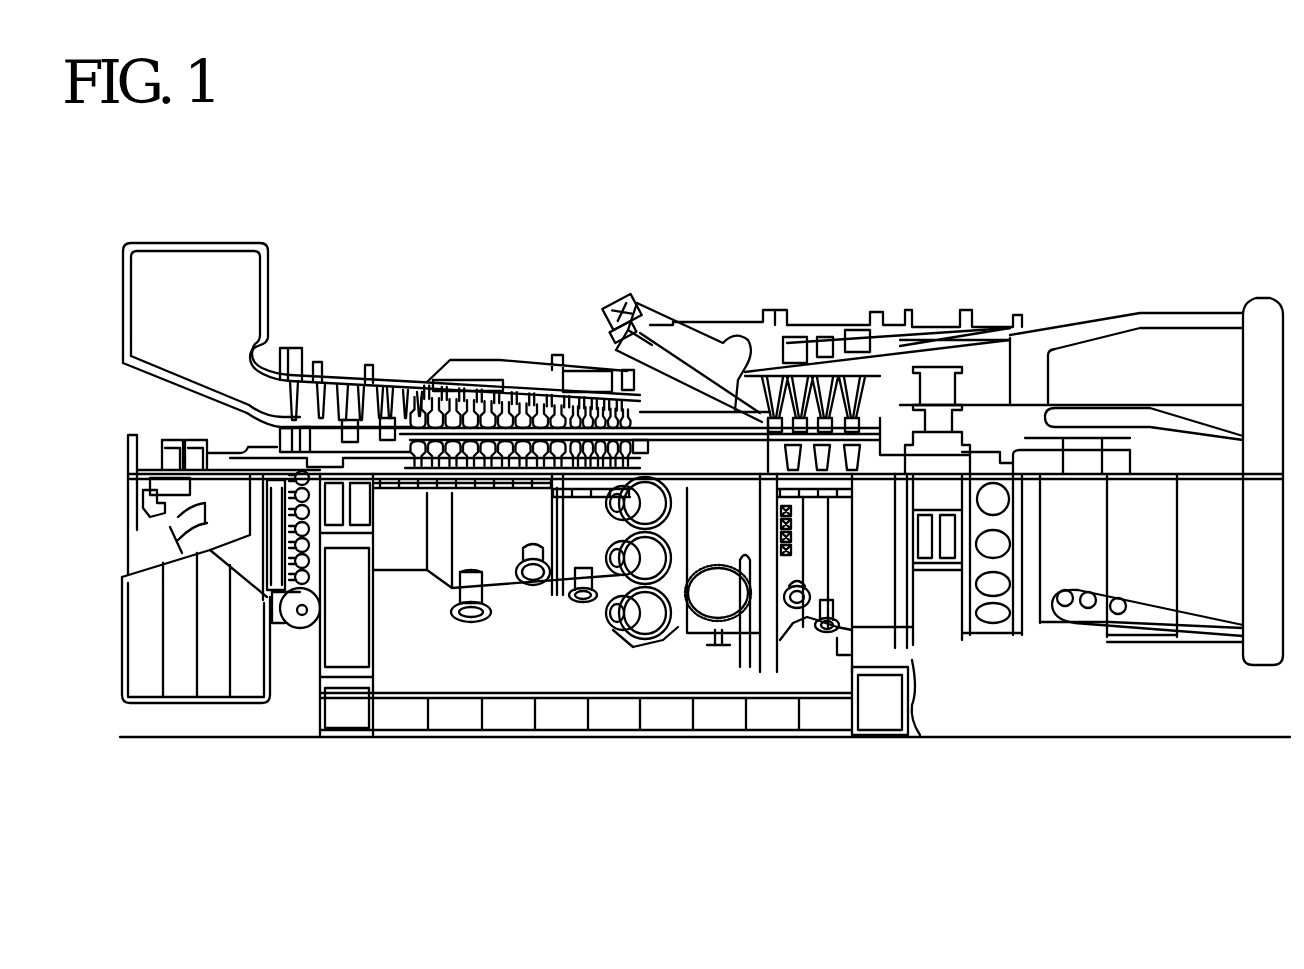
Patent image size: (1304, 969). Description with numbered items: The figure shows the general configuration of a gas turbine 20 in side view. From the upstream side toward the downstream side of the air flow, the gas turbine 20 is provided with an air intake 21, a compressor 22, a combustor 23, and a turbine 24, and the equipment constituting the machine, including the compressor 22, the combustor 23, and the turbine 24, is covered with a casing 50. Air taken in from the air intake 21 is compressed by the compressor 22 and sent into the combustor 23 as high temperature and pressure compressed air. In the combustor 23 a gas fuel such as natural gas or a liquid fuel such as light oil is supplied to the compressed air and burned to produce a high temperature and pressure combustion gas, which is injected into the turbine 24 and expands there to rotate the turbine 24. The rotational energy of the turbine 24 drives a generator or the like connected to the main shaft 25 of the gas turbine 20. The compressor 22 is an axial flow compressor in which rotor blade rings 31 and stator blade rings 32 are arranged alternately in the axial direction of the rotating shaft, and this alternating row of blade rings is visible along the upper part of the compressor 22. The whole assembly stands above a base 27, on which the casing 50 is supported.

The gas turbine 20 is at (920, 198).
The air intake 21 is at (145, 330).
The compressor 22 is at (425, 387).
The combustor 23 is at (677, 332).
The turbine 24 is at (822, 370).
The main shaft 25 is at (988, 457).
The base 27 is at (1020, 737).
The rotor blade rings 31 is at (408, 410).
The stator blade rings 32 is at (492, 398).
The casing 50 is at (318, 402).